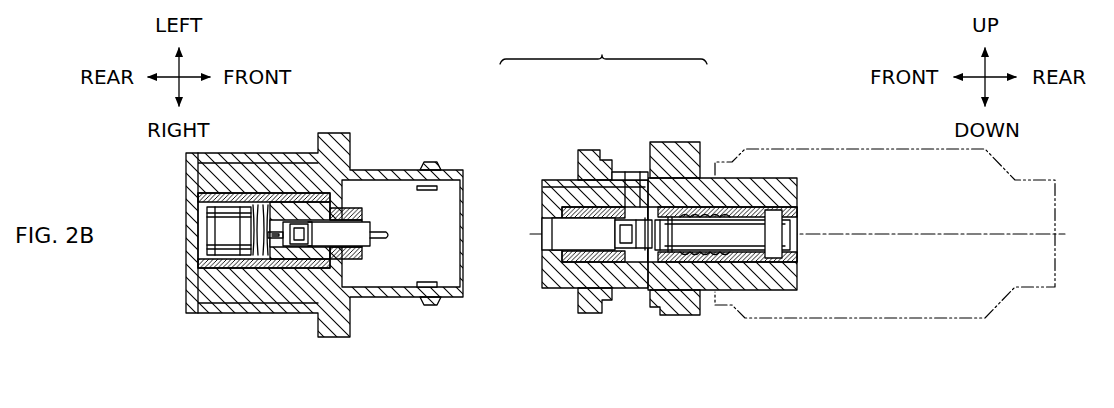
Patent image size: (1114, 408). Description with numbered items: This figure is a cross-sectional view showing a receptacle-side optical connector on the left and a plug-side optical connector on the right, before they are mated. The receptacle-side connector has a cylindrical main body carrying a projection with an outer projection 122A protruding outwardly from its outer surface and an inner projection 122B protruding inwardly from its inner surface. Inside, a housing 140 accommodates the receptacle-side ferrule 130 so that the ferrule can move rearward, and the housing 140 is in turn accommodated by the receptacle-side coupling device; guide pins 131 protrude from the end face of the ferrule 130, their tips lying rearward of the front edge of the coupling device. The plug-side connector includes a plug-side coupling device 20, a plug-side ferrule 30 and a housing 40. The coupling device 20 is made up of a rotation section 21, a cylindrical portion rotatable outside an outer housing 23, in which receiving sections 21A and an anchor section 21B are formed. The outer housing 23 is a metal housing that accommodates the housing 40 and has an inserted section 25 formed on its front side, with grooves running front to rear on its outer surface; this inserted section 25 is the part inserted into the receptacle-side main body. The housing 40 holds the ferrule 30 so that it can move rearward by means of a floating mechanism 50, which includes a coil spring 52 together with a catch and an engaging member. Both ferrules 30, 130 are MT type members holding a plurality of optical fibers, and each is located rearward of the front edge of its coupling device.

The plug-side coupling device 20 is at (782, 135).
The rotation section 21 is at (585, 178).
The receiving sections 21A is at (630, 163).
The anchor section 21B is at (625, 178).
The outer housing 23 is at (723, 177).
The inserted section 25 is at (535, 185).
The plug-side ferrule 30 is at (558, 248).
The housing 40 is at (603, 262).
The floating mechanism 50 is at (731, 283).
The coil spring 52 is at (666, 260).
The outer projection 122A is at (430, 162).
The inner projection 122B is at (437, 197).
The receptacle-side ferrule 130 is at (355, 233).
The guide pins 131 is at (378, 235).
The housing 140 is at (270, 193).